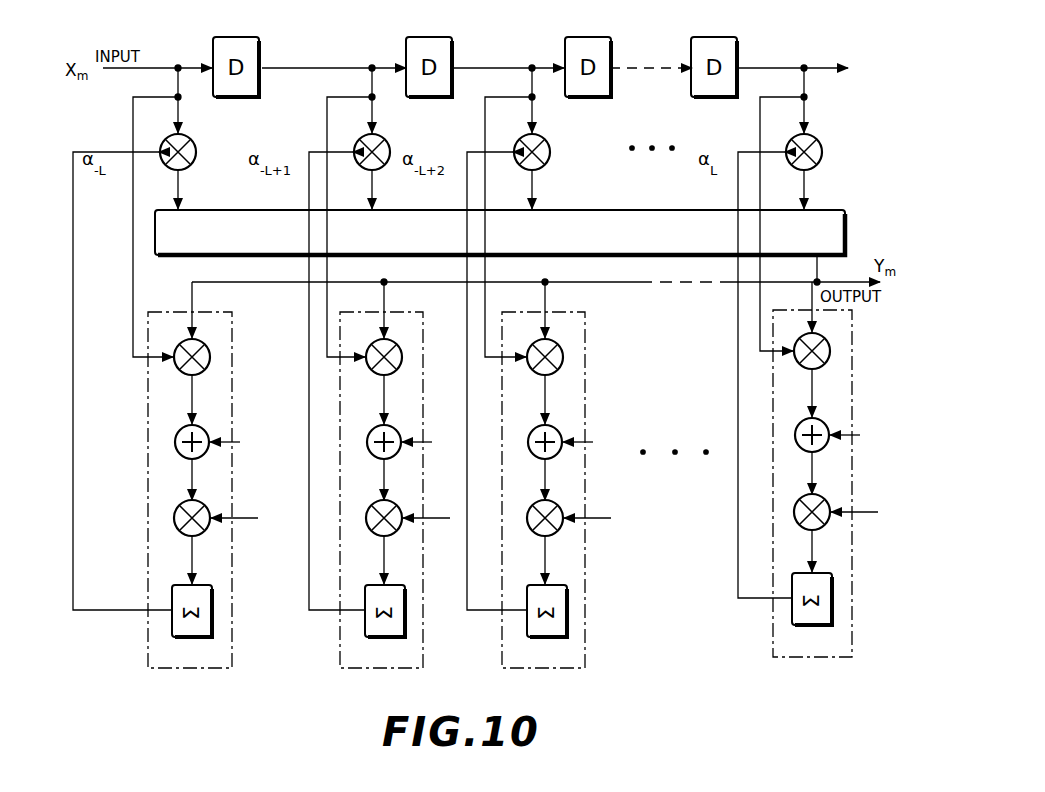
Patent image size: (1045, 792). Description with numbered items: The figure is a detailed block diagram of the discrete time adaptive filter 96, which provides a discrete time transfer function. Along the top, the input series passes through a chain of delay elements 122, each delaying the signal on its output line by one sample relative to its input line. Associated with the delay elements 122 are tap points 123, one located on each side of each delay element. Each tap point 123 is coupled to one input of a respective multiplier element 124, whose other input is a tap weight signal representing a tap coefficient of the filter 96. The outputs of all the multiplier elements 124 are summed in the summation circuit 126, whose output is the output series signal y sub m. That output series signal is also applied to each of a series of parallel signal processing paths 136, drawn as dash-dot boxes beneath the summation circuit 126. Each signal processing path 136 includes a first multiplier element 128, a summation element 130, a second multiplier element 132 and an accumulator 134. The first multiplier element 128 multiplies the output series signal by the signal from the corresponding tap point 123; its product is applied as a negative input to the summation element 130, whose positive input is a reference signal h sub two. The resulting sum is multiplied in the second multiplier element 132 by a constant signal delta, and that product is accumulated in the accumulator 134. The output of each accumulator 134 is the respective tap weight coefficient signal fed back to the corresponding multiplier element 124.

The discrete time adaptive filter 96 is at (132, 33).
The delay elements 122 is at (262, 38).
The tap points 123 is at (192, 38).
The multiplier elements 124 is at (193, 146).
The summation circuit 126 is at (606, 210).
The first multiplier element 128 is at (211, 358).
The summation element 130 is at (175, 447).
The second multiplier element 132 is at (207, 510).
The accumulator 134 is at (172, 625).
The signal processing paths 136 is at (205, 296).